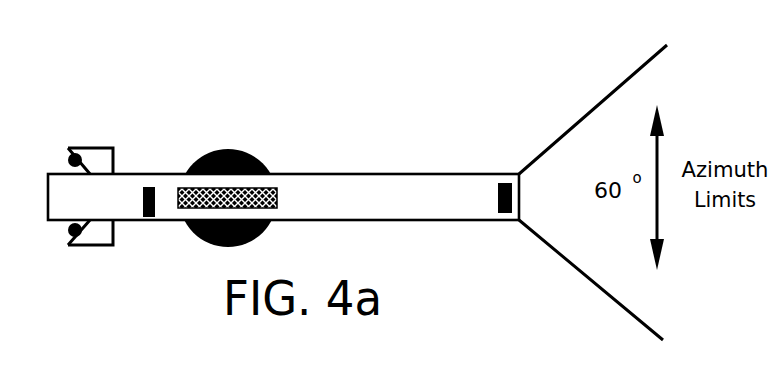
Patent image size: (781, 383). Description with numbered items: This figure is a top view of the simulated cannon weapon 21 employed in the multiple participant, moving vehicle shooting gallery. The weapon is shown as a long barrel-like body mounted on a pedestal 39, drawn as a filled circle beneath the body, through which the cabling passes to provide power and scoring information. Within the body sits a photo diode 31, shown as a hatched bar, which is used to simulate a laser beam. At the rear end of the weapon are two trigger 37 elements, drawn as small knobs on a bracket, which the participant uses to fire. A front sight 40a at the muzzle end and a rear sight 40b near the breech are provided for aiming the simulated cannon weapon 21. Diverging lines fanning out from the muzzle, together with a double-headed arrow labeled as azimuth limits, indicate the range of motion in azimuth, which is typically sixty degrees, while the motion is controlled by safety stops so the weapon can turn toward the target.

The simulated cannon weapon 21 is at (389, 174).
The photo diode 31 is at (257, 188).
The trigger 37 is at (70, 158).
The pedestal 39 is at (210, 245).
The front sight 40a is at (498, 185).
The rear sight 40b is at (152, 187).